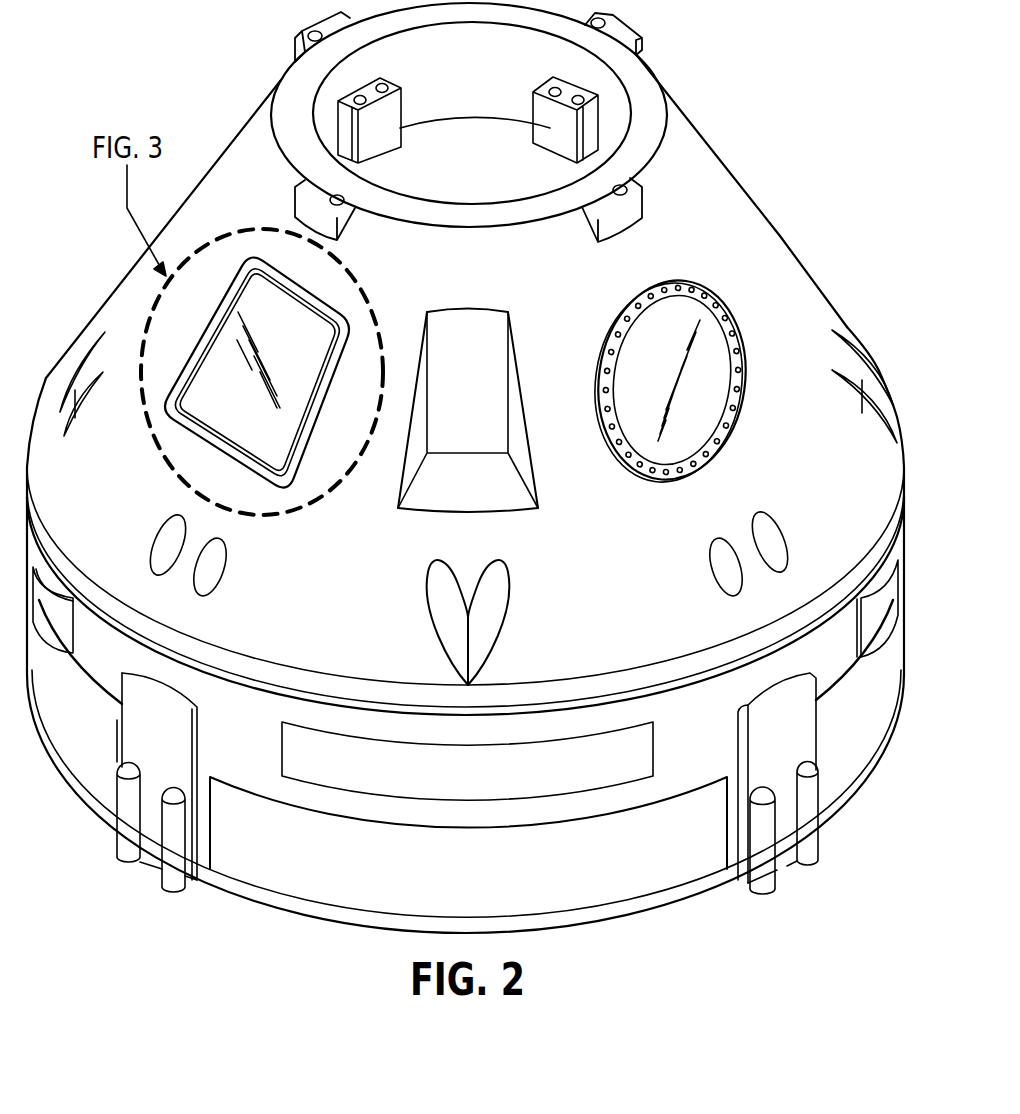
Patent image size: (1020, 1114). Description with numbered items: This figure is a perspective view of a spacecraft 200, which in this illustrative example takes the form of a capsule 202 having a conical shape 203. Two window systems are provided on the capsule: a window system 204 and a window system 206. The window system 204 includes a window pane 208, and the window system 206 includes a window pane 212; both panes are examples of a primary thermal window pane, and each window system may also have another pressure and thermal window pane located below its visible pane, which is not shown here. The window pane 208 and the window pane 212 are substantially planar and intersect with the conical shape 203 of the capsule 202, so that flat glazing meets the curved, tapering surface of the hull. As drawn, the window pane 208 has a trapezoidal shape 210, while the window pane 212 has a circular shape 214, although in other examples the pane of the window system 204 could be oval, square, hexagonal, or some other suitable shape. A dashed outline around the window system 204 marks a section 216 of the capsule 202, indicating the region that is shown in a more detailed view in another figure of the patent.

The spacecraft 200 is at (705, 141).
The capsule 202 is at (790, 203).
The conical shape 203 is at (238, 191).
The window system 204 is at (244, 417).
The window system 206 is at (703, 369).
The window pane 208 is at (185, 412).
The trapezoidal shape 210 is at (270, 492).
The window pane 212 is at (720, 417).
The circular shape 214 is at (672, 380).
The section 216 is at (162, 455).